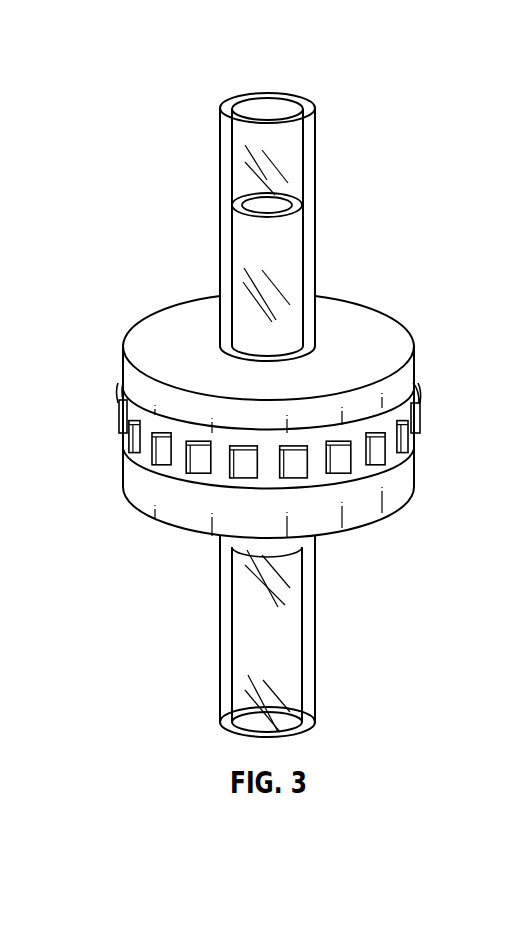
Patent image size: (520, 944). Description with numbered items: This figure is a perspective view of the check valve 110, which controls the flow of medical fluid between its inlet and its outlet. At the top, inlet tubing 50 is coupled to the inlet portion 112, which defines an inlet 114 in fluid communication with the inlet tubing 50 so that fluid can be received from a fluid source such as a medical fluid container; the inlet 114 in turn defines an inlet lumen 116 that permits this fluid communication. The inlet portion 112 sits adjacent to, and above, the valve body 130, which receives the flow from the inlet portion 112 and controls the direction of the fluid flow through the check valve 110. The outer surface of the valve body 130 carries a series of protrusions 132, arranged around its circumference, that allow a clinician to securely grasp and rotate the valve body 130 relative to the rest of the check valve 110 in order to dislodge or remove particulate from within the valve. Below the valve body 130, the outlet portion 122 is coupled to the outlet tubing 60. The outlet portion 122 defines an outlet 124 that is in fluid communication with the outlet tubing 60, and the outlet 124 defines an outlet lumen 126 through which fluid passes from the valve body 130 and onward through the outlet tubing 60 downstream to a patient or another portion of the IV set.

The check valve 110 is at (374, 80).
The inlet tubing 50 is at (306, 152).
The outlet tubing 60 is at (308, 622).
The inlet portion 112 is at (153, 332).
The inlet 114 is at (250, 253).
The inlet lumen 116 is at (265, 205).
The outlet portion 122 is at (140, 510).
The outlet 124 is at (265, 559).
The outlet lumen 126 is at (272, 560).
The valve body 130 is at (415, 402).
The protrusions 132 is at (116, 420).